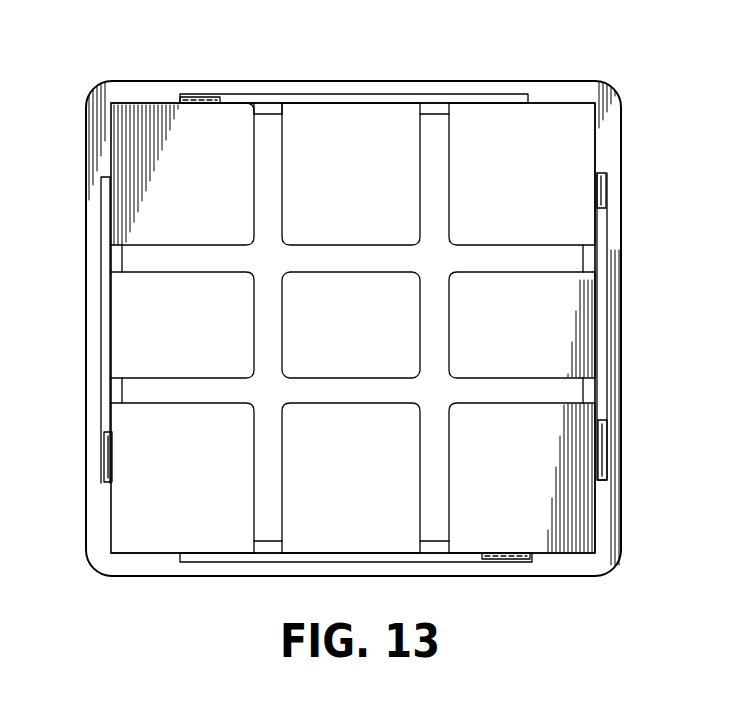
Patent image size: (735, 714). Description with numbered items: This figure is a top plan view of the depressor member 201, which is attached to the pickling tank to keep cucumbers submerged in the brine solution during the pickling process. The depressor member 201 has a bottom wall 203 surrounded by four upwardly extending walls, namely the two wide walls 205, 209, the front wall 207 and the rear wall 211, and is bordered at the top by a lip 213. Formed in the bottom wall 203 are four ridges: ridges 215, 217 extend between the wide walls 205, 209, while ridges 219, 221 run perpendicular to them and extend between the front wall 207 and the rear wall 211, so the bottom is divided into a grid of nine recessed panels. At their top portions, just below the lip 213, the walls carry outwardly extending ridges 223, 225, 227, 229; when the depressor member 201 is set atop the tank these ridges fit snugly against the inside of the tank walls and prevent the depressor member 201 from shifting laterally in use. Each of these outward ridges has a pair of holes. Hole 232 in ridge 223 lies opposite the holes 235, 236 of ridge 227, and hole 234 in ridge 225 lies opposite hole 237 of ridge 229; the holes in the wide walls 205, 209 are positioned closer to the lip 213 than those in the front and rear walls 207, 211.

The depressor member 201 is at (630, 150).
The bottom wall 203 is at (373, 338).
The wide wall 205 is at (112, 418).
The front wall 207 is at (328, 553).
The wide wall 209 is at (593, 225).
The rear wall 211 is at (287, 108).
The lip 213 is at (98, 115).
The ridge 215 is at (177, 258).
The ridge 217 is at (177, 393).
The ridge 219 is at (268, 184).
The ridge 221 is at (432, 330).
The outwardly extending ridge 223 is at (108, 353).
The outwardly extending ridge 225 is at (388, 556).
The outwardly extending ridge 227 is at (603, 345).
The outwardly extending ridge 229 is at (318, 100).
The hole 232 is at (105, 464).
The hole 234 is at (515, 559).
The hole 235 is at (603, 188).
The hole 236 is at (601, 456).
The hole 237 is at (196, 98).